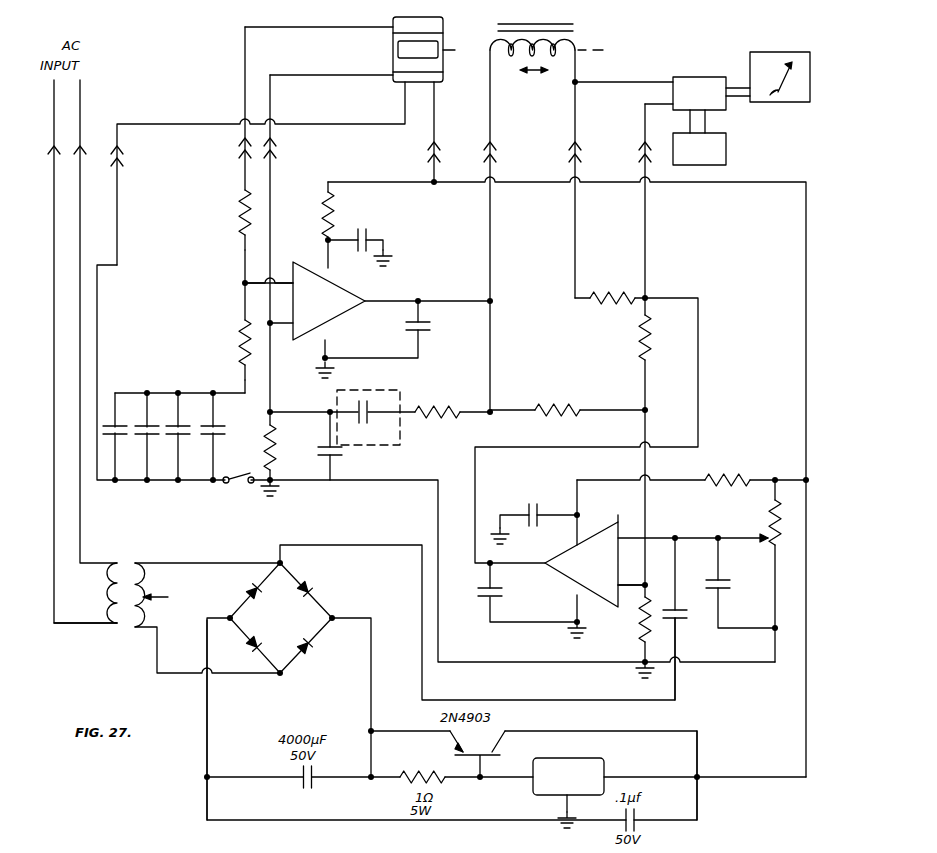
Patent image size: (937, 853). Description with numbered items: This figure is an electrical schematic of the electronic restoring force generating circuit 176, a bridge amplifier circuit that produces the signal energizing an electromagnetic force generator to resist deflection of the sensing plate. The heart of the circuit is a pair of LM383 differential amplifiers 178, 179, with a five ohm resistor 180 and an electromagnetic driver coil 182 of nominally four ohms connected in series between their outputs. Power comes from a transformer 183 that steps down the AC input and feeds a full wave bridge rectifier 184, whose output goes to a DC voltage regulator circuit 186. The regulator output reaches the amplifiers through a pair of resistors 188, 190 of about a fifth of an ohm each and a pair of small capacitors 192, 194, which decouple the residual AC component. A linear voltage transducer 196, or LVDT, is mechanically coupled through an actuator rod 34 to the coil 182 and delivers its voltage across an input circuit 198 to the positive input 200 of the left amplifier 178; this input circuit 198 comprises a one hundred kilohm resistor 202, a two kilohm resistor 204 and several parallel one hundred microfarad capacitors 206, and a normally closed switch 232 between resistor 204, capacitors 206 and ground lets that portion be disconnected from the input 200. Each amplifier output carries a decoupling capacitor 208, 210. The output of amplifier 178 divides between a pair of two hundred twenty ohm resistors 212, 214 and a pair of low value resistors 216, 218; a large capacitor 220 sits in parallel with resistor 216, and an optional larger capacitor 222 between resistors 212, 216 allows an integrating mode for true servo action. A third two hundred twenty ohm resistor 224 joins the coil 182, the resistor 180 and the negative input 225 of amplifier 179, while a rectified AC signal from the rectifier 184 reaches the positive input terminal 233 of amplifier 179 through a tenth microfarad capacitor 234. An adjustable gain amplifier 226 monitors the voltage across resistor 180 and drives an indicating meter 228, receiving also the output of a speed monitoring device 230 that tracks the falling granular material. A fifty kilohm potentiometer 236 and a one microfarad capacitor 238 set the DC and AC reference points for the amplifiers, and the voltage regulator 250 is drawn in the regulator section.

The actuator rod 34 is at (491, 49).
The electronic restoring force generating circuit 176 is at (178, 767).
The differential amplifier 178 is at (358, 296).
The differential amplifier 179 is at (558, 556).
The 5 ohm resistor 180 is at (588, 311).
The electromagnetic driver coil 182 is at (585, 44).
The transformer 183 is at (121, 633).
The full wave bridge rectifier 184 is at (276, 682).
The DC voltage regulator circuit 186 is at (668, 796).
The 0.18 ohm resistor 188 is at (319, 193).
The 0.18 ohm resistor 190 is at (726, 488).
The 0.2 microfarad capacitor 192 is at (383, 238).
The 0.2 microfarad capacitor 194 is at (514, 508).
The linear voltage transducer 196 is at (388, 80).
The input circuit 198 is at (174, 370).
The positive input 200 is at (294, 272).
The 100k ohm resistor 202 is at (243, 196).
The 2k ohm resistor 204 is at (240, 328).
The 100 microfarad capacitors 206 is at (207, 417).
The 0.2 microfarad decoupling capacitor 208 is at (404, 328).
The 0.2 microfarad decoupling capacitor 210 is at (478, 598).
The 220 ohm resistor 212 is at (448, 408).
The 220 ohm resistor 214 is at (577, 410).
The 2.2 ohm resistor 216 is at (277, 424).
The 2.2 ohm resistor 218 is at (641, 610).
The 4500 microfarad capacitor 220 is at (337, 476).
The 9000 microfarad capacitor 222 is at (369, 391).
The 220 ohm resistor 224 is at (639, 346).
The negative input 225 is at (625, 584).
The adjustable gain amplifier 226 is at (697, 77).
The indicating meter 228 is at (782, 52).
The speed monitoring device 230 is at (728, 150).
The normally closed switch 232 is at (241, 489).
The positive input terminal 233 is at (620, 526).
The 0.1 microfarad capacitor 234 is at (676, 664).
The 50k adjustable potentiometer 236 is at (780, 492).
The 1 microfarad capacitor 238 is at (715, 579).
The voltage regulator 250 is at (497, 805).